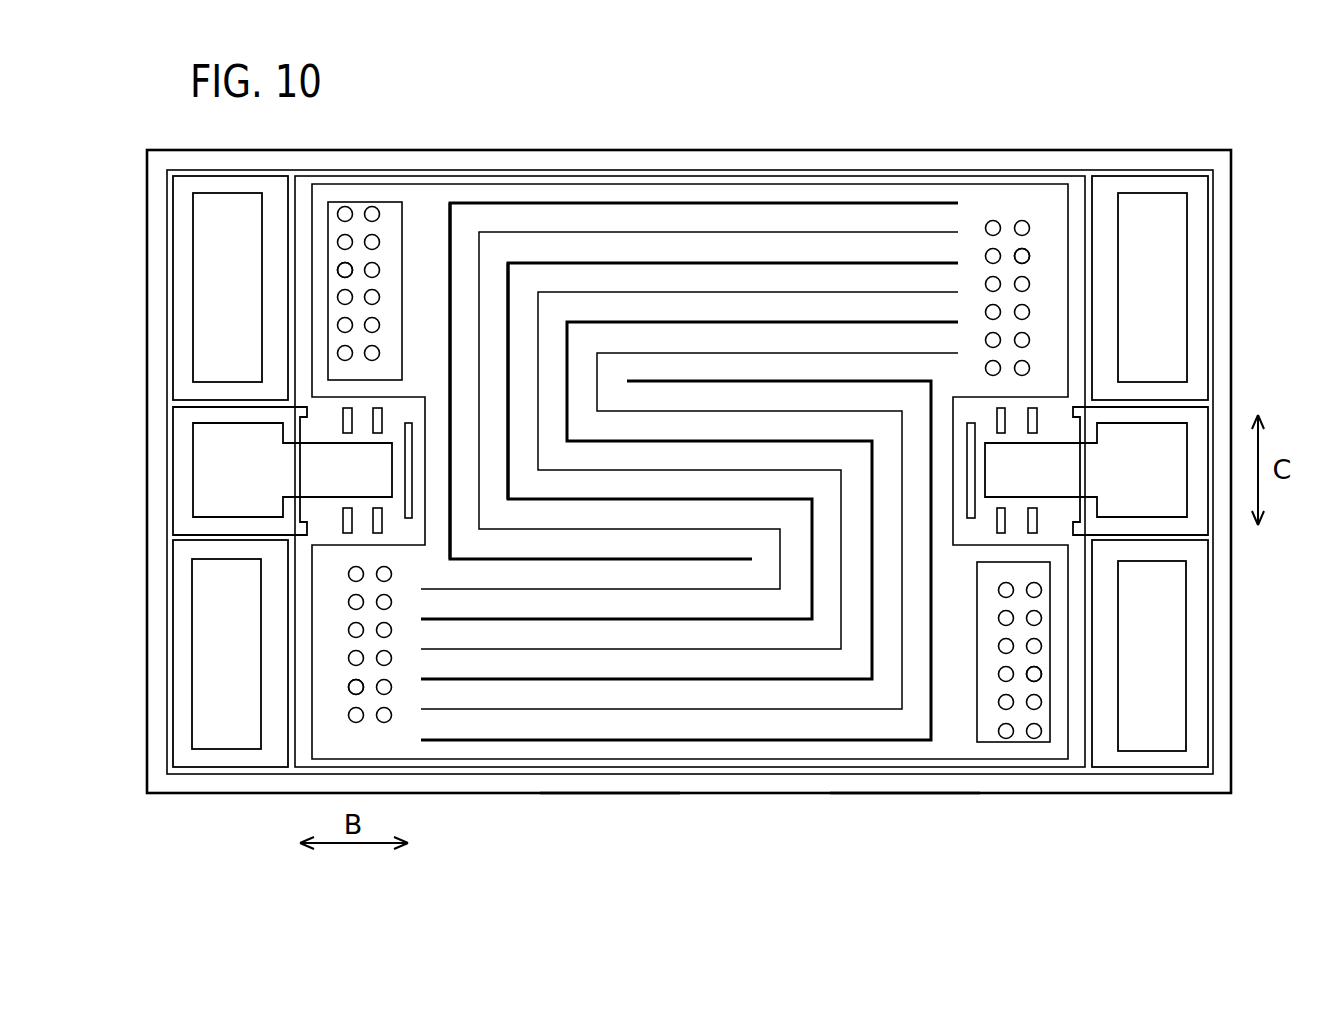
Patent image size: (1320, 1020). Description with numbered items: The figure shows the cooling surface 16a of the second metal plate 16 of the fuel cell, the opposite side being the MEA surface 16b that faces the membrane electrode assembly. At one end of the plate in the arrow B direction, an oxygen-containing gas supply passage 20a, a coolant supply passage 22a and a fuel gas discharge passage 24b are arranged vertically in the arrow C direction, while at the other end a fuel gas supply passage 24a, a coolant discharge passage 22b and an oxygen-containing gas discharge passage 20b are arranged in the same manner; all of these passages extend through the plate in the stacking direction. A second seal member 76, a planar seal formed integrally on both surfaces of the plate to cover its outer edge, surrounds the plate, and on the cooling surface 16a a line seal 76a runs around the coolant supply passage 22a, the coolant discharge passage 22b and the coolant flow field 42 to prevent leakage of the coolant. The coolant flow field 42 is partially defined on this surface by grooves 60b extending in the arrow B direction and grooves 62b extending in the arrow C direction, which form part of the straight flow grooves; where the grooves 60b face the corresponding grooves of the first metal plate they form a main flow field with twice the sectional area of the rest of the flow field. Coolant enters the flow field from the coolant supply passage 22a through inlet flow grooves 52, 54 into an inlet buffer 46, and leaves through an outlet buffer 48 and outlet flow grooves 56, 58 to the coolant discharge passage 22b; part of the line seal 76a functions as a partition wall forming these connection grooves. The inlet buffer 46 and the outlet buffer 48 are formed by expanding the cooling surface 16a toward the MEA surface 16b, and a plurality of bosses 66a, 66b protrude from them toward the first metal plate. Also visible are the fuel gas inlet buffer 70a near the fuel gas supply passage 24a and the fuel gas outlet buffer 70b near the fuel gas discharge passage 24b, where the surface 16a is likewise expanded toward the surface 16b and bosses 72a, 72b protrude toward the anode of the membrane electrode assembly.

The second metal plate 16 is at (882, 108).
The surface (cooling surface) 16a is at (607, 792).
The surface (MEA surface) 16b is at (900, 792).
The oxygen-containing gas supply passage 20a is at (230, 288).
The oxygen-containing gas discharge passage 20b is at (1150, 653).
The coolant supply passage 22a is at (282, 471).
The coolant discharge passage 22b is at (1096, 471).
The fuel gas supply passage 24a is at (1150, 288).
The fuel gas discharge passage 24b is at (230, 653).
The coolant flow field 42 is at (688, 228).
The inlet buffer (coolant buffer) 46 is at (360, 208).
The outlet buffer (coolant buffer) 48 is at (1019, 726).
The inlet flow groove (connection groove) 52 is at (360, 517).
The inlet flow groove (connection groove) 54 is at (360, 424).
The outlet flow groove (connection groove) 56 is at (1018, 517).
The outlet flow groove (connection groove) 58 is at (1018, 424).
The grooves 60b is at (622, 263).
The grooves 62b is at (508, 450).
The bosses 66a is at (343, 268).
The bosses 66b is at (1036, 674).
The inlet buffer (fuel gas buffer) 70a is at (1050, 356).
The outlet buffer (fuel gas buffer) 70b is at (328, 586).
The bosses 72a is at (1030, 256).
The bosses 72b is at (349, 688).
The second seal member 76 is at (880, 167).
The line seal 76a is at (480, 176).